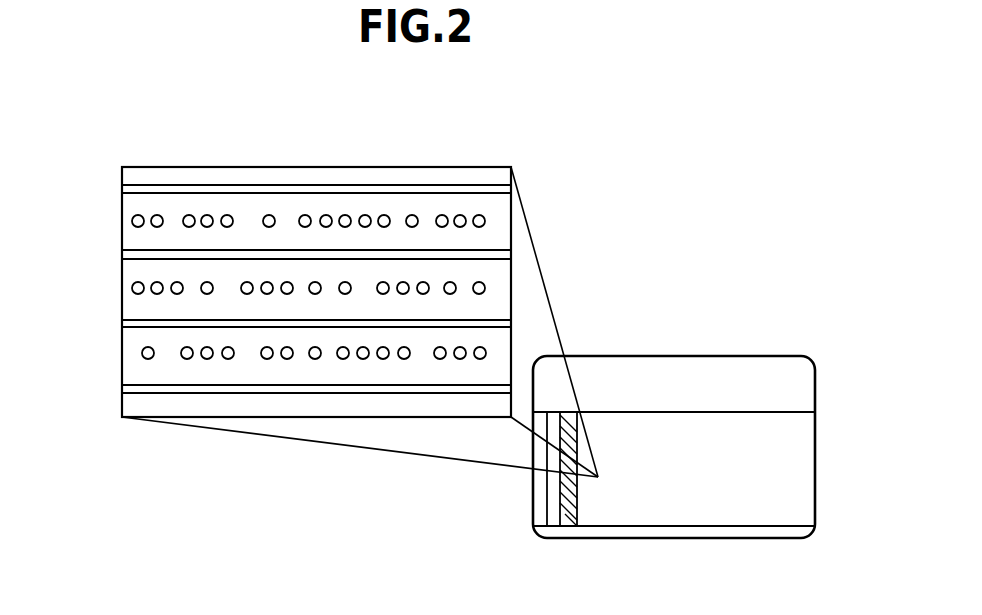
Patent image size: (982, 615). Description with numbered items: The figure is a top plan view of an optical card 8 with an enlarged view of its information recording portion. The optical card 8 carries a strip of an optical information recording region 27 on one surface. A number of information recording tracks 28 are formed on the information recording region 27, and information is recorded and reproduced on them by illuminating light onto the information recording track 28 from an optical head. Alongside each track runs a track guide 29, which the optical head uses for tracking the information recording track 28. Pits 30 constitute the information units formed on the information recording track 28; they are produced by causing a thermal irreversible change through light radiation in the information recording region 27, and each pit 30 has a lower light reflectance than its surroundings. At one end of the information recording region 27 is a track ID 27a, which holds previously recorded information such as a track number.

The optical card 8 is at (678, 356).
The optical information recording region 27 is at (800, 443).
The track ID 27a is at (573, 517).
The information recording track 28 is at (128, 303).
The track guide 29 is at (123, 253).
The pit 30 is at (322, 213).